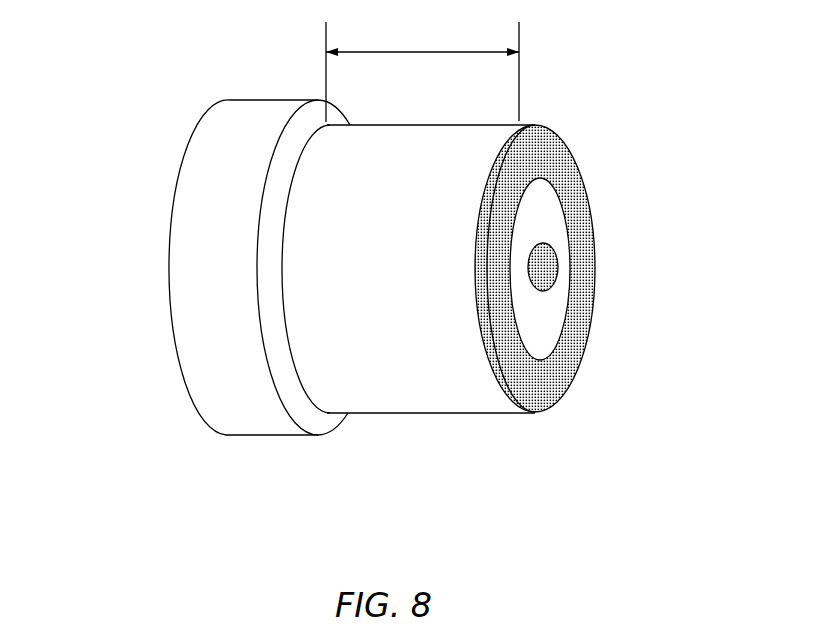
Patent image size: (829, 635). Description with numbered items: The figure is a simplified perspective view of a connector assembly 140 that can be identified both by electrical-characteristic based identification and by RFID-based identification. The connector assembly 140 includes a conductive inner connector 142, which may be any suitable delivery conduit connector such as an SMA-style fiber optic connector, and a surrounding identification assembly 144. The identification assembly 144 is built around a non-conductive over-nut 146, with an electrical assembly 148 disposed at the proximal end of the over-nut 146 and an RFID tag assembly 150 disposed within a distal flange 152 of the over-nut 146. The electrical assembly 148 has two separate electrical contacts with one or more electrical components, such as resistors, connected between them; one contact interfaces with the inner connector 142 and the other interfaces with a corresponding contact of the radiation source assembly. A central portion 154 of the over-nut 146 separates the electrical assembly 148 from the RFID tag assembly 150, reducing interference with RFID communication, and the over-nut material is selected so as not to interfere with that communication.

The connector assembly 140 is at (606, 86).
The conductive inner connector 142 is at (546, 266).
The identification assembly 144 is at (612, 166).
The non-conductive over-nut 146 is at (393, 281).
The electrical assembly 148 is at (541, 413).
The RFID tag assembly 150 is at (166, 138).
The distal flange 152 is at (267, 101).
The central portion 154 is at (422, 72).